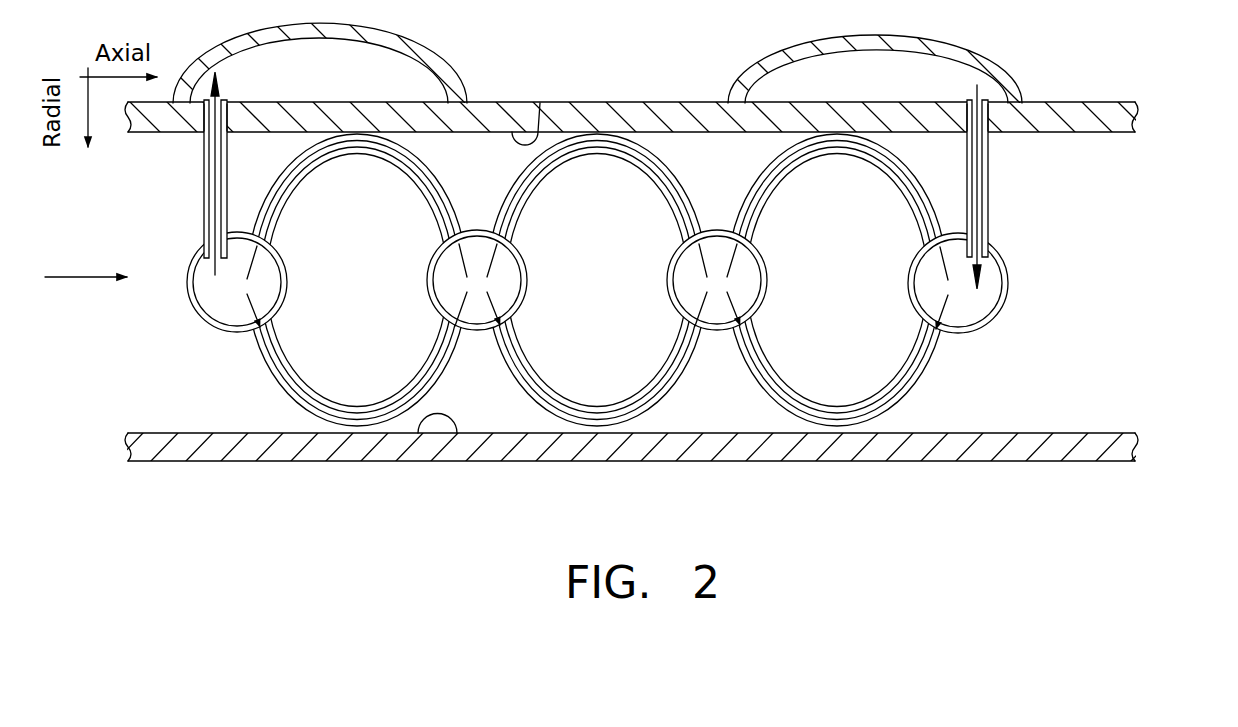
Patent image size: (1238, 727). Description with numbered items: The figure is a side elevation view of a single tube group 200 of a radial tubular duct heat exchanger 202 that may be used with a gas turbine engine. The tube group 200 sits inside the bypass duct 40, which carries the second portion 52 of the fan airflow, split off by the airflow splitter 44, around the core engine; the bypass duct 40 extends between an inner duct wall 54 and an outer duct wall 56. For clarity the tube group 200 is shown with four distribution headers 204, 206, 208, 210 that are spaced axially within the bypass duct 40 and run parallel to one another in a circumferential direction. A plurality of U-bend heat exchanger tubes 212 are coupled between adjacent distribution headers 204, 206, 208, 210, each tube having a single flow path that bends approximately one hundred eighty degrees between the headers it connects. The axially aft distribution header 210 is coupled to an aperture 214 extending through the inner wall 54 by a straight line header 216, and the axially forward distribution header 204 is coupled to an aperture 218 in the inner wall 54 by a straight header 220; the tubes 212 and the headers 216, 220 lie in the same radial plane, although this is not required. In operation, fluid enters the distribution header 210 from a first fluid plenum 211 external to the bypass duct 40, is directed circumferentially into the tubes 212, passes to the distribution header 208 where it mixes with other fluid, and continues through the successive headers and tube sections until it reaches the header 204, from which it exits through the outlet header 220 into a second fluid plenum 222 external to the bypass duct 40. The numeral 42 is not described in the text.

The bypass duct 40 is at (483, 161).
The outer duct wall 42 is at (618, 112).
The airflow splitter 44 is at (822, 446).
The second portion 52 is at (80, 277).
The inner duct wall 54 is at (540, 103).
The outer duct wall 56 is at (457, 433).
The tube group 200 is at (1082, 190).
The radial tubular duct heat exchanger 202 is at (746, 486).
The axially forward distribution header 204 is at (224, 330).
The distribution header 206 is at (478, 329).
The distribution header 208 is at (717, 329).
The axially aft distribution header 210 is at (988, 322).
The first fluid plenum 211 is at (888, 67).
The U-bend heat exchanger tubes 212 is at (283, 198).
The aperture 214 is at (967, 135).
The straight line header 216 is at (988, 162).
The aperture 218 is at (228, 135).
The straight header 220 is at (204, 148).
The second fluid plenum 222 is at (357, 57).